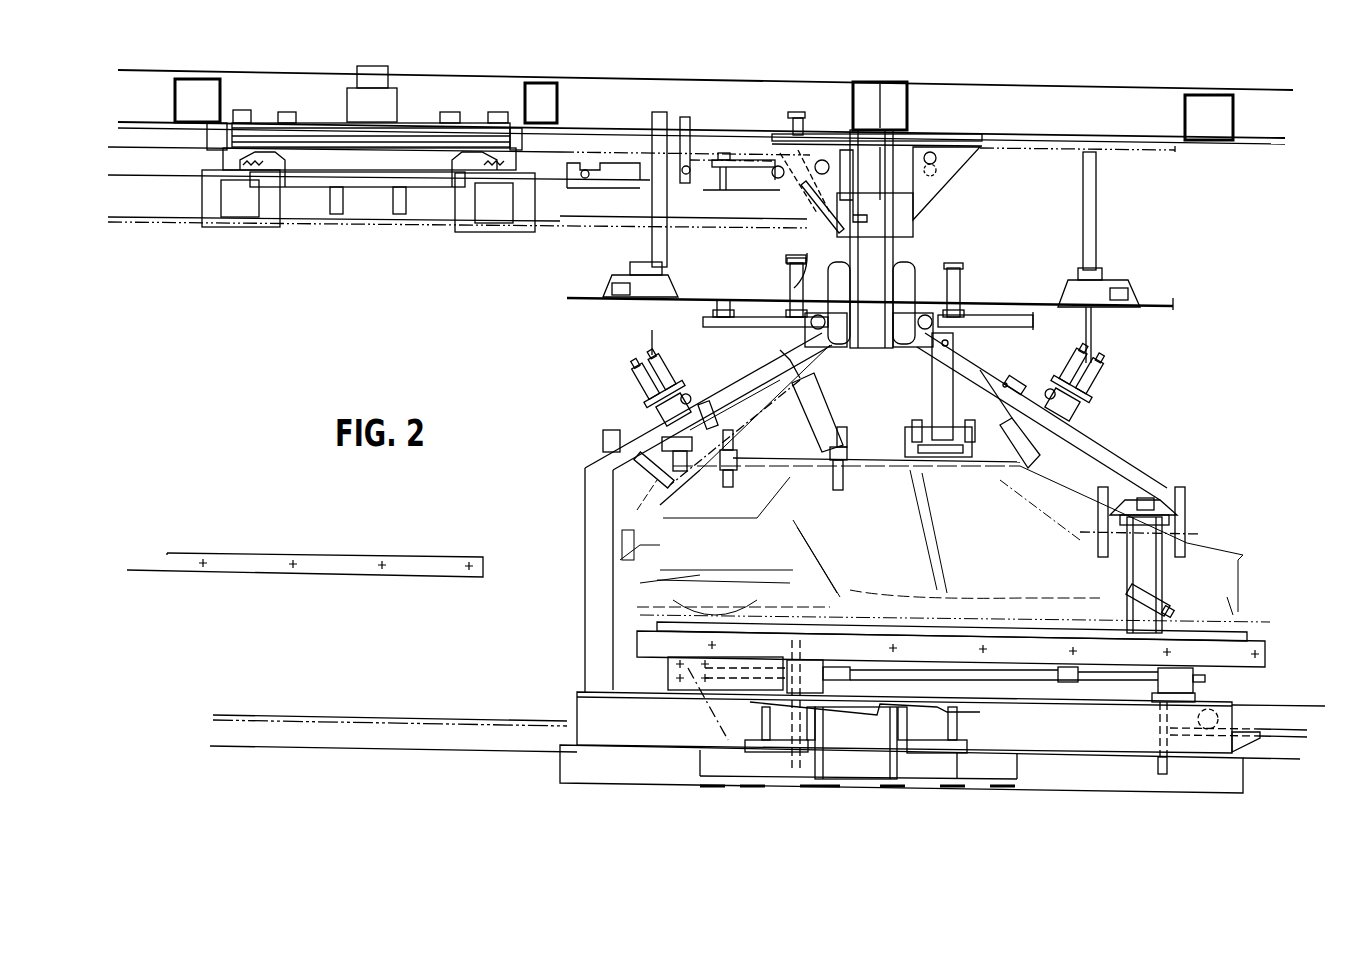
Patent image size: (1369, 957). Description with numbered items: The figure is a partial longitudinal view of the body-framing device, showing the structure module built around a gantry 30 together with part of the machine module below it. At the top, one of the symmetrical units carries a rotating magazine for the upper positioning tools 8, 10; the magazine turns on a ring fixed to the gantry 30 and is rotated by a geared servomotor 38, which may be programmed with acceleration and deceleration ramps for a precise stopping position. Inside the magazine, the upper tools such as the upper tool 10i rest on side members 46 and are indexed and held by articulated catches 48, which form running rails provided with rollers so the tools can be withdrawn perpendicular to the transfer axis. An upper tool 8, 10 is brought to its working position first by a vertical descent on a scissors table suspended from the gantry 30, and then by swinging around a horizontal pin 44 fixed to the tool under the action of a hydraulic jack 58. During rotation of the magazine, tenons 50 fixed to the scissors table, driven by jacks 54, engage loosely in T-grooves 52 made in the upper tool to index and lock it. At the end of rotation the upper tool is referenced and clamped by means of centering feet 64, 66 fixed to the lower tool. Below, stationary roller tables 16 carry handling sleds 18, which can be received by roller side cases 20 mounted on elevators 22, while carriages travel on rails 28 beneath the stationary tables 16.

The upper positioning tool 8 is at (1087, 443).
The upper positioning tool 10 is at (595, 500).
The upper tool 10i is at (400, 205).
The stationary roller table 16 is at (402, 565).
The handling sled 18 is at (1237, 638).
The roller side case 20 is at (1263, 660).
The elevator 22 is at (1152, 707).
The rail 28 is at (362, 722).
The gantry 30 is at (578, 100).
The geared servomotor 38 is at (390, 98).
The horizontal pin 44 is at (953, 302).
The side member 46 is at (270, 222).
The articulated catch 48 is at (293, 150).
The tenon 50 is at (718, 300).
The T-groove 52 is at (728, 303).
The jack 54 is at (626, 385).
The hydraulic jack 58 is at (648, 236).
The centering foot 64 is at (1132, 617).
The centering foot 66 is at (578, 643).